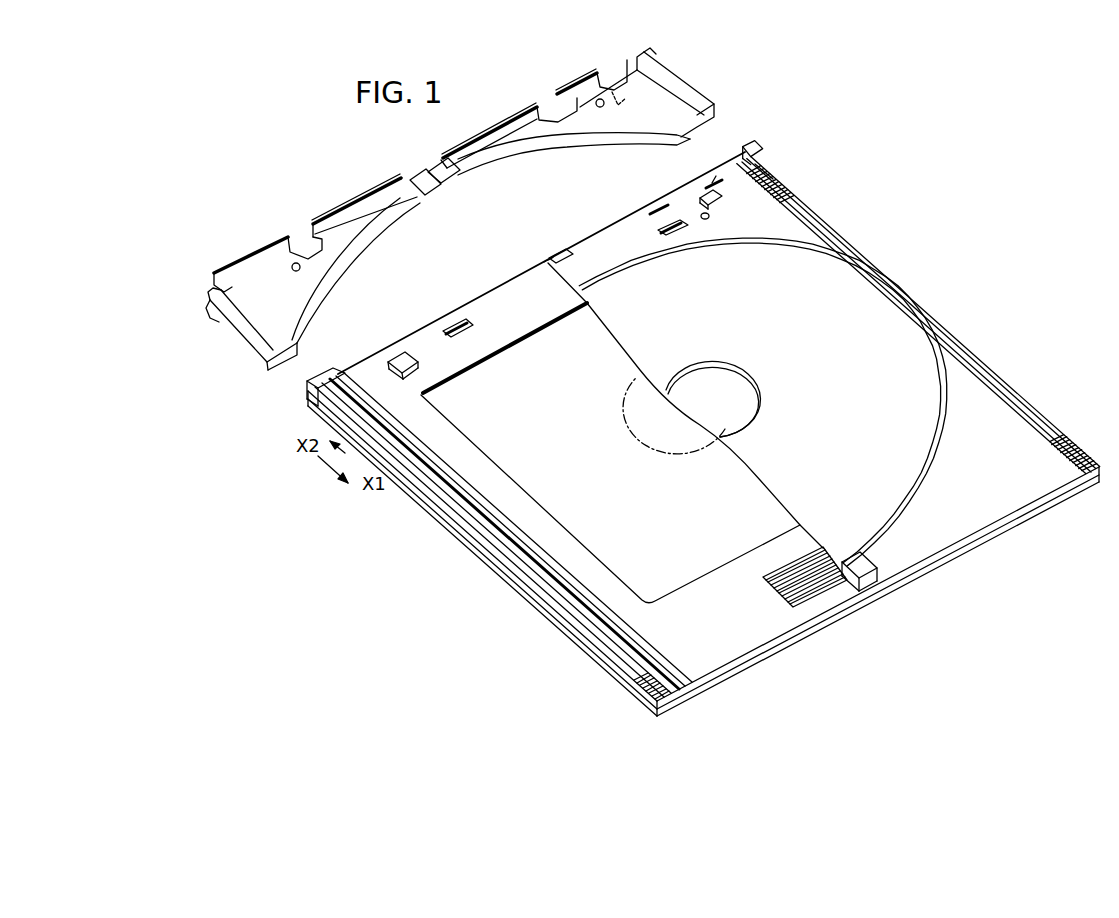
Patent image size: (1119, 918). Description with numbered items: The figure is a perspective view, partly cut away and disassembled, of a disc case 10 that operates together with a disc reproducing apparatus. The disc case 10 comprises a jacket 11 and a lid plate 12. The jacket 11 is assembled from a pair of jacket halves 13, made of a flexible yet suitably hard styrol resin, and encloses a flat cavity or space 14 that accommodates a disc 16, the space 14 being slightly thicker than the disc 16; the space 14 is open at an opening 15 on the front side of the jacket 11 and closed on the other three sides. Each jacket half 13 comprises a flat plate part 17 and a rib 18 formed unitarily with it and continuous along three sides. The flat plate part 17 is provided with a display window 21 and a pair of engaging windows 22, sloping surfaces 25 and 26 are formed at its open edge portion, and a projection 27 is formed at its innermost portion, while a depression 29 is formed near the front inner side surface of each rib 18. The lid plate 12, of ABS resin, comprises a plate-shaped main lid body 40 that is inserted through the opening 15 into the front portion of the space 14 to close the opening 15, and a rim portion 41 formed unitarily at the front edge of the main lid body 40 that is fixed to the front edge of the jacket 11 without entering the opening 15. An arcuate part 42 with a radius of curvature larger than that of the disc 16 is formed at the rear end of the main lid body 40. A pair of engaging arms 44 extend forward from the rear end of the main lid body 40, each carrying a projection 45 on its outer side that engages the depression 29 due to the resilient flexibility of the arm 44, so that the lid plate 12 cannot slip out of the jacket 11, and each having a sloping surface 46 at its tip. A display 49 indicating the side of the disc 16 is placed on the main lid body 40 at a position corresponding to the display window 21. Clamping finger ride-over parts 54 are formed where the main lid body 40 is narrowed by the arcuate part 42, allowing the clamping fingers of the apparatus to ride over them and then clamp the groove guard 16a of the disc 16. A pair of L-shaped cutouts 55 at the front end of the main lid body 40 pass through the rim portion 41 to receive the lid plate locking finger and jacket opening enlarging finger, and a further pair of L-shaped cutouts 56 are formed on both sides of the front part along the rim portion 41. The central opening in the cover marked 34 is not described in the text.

The disc case 10 is at (780, 147).
The jacket 11 is at (517, 589).
The lid plate 12 is at (346, 210).
The jacket halves 13 is at (1036, 509).
The flat cavity or space 14 is at (990, 385).
The opening 15 is at (557, 256).
The disc 16 is at (930, 392).
The groove guard 16a is at (940, 433).
The flat plate part 17 is at (453, 463).
The rib 18 is at (924, 316).
The display window 21 is at (398, 359).
The engaging windows 22 is at (452, 325).
The sloping surface 25 is at (660, 210).
The sloping surface 26 is at (712, 183).
The projection 27 is at (866, 560).
The depression 29 is at (766, 172).
The center opening of cover plate 34 is at (648, 437).
The main lid body 40 is at (520, 143).
The rim portion 41 is at (476, 140).
The arcuate part 42 is at (388, 223).
The engaging arms 44 is at (238, 342).
The projection 45 is at (209, 320).
The sloping surface 46 is at (208, 297).
The display 49 is at (292, 273).
The clamping finger ride-over parts 54 is at (412, 178).
The L-shaped cutouts 55 is at (316, 244).
The L-shaped cutouts 56 is at (222, 290).